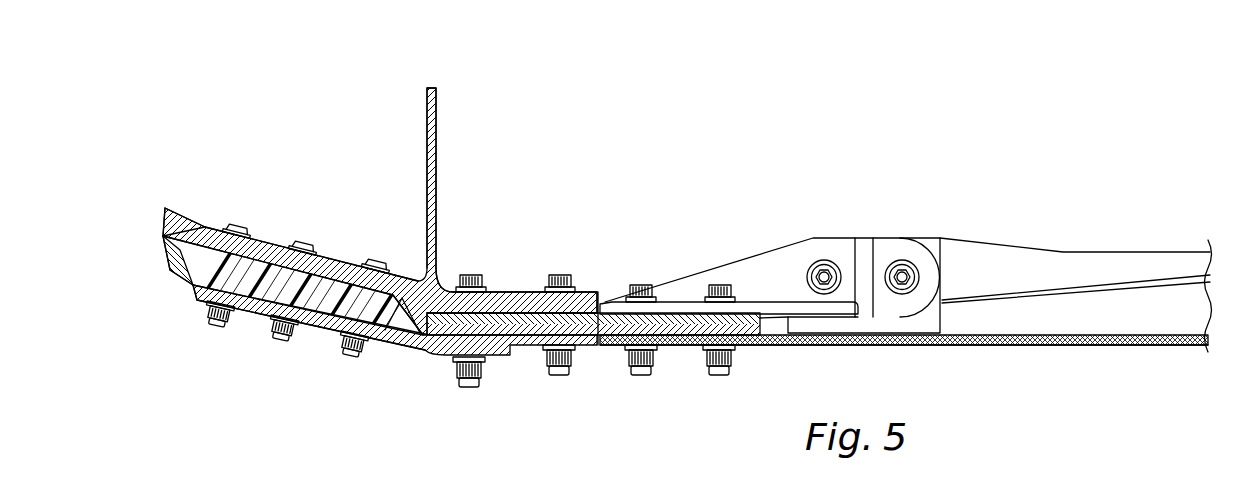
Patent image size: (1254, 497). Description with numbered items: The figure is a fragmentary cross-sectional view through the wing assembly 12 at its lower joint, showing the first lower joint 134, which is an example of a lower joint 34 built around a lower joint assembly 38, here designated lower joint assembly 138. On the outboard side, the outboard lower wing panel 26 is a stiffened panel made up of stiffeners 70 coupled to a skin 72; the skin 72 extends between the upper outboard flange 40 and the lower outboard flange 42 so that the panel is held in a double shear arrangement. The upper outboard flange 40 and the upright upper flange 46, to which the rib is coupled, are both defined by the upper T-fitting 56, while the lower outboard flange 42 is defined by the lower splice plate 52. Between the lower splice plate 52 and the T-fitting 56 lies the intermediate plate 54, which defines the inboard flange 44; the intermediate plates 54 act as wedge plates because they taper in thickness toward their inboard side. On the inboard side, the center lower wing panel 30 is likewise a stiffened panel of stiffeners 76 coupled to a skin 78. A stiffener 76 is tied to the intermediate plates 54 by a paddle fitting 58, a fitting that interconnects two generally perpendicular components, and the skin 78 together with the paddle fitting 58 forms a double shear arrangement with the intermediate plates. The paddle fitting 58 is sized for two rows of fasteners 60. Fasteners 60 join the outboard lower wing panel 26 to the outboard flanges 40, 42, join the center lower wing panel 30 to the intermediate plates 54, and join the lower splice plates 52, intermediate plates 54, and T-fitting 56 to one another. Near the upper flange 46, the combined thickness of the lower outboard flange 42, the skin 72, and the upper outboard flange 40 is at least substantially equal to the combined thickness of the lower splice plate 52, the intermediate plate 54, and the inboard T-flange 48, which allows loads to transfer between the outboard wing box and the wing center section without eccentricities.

The panel joint assembly 12 is at (652, 261).
The outboard lower wing panel 26 is at (257, 285).
The center lower wing panel 30 is at (905, 334).
The lower joint 34 is at (599, 227).
The lower joint assembly 38 is at (380, 200).
The upper outboard flange 40 is at (330, 256).
The lower outboard flange 42 is at (382, 348).
The inboard flange 44 is at (672, 312).
The upper flange 46 is at (427, 125).
The inboard T-flange 48 is at (512, 269).
The lower splice plate 52 is at (395, 358).
The intermediate plate 54 is at (607, 284).
The upper T-fitting 56 is at (463, 178).
The paddle fitting 58 is at (735, 258).
The fasteners 60 is at (355, 358).
The stiffener 70 is at (190, 211).
The skin 72 is at (188, 302).
The stiffener 76 is at (1093, 252).
The skin 78 is at (975, 346).
The first lower joint 134 is at (508, 204).
The lower joint assembly 138 is at (305, 238).